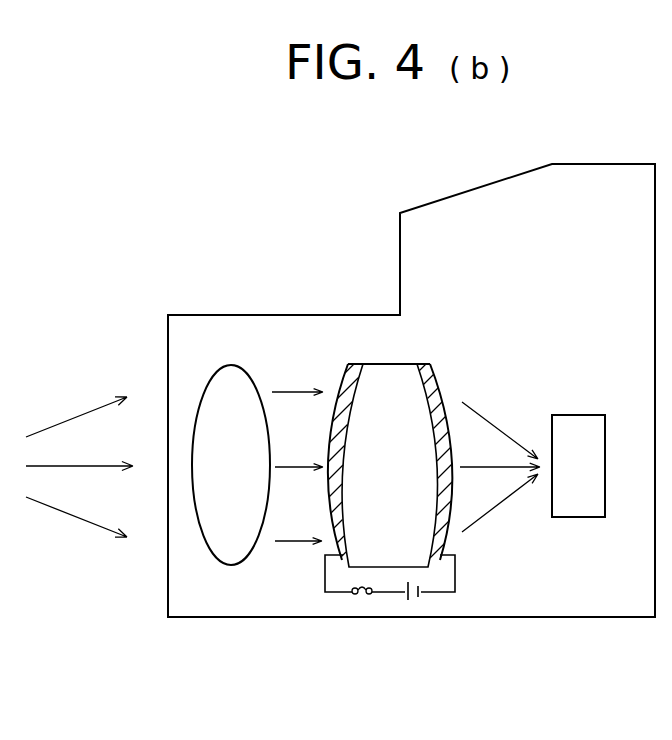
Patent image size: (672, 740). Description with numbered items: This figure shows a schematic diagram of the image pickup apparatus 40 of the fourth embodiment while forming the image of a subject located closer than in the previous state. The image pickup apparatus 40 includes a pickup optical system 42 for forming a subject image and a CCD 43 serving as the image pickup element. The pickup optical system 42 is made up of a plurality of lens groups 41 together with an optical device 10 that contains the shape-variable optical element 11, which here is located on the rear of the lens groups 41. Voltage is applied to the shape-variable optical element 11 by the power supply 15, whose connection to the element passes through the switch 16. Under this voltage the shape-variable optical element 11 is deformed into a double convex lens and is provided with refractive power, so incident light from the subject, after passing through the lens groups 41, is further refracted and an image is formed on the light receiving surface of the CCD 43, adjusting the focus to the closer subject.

The image pickup apparatus 40 is at (233, 246).
The pickup optical system 42 is at (528, 309).
The lens groups 41 is at (231, 365).
The optical device 10 is at (525, 362).
The shape-variable optical element 11 is at (513, 392).
The CCD 43 is at (578, 415).
The switch 16 is at (365, 600).
The power supply 15 is at (413, 600).